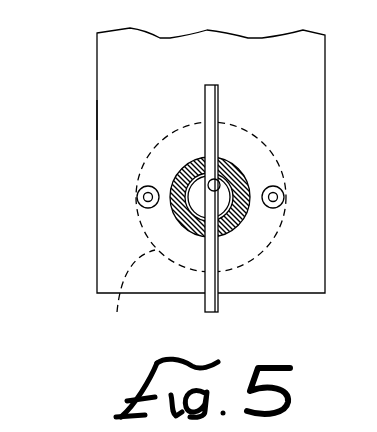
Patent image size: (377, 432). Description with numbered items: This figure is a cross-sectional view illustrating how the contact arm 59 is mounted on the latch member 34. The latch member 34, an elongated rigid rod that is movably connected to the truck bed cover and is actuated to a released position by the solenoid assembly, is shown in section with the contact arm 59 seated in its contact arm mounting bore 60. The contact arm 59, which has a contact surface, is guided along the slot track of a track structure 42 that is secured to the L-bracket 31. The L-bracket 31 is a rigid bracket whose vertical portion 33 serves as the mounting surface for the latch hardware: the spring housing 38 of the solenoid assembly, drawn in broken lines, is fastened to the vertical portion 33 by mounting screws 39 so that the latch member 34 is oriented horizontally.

The L-bracket 31 is at (106, 82).
The vertical portion 33 is at (102, 118).
The latch member 34 is at (230, 208).
The spring housing 38 is at (126, 296).
The mounting screws 39 is at (137, 197).
The track structure 42 is at (174, 180).
The contact arm 59 is at (205, 107).
The contact arm mounting bore 60 is at (217, 181).